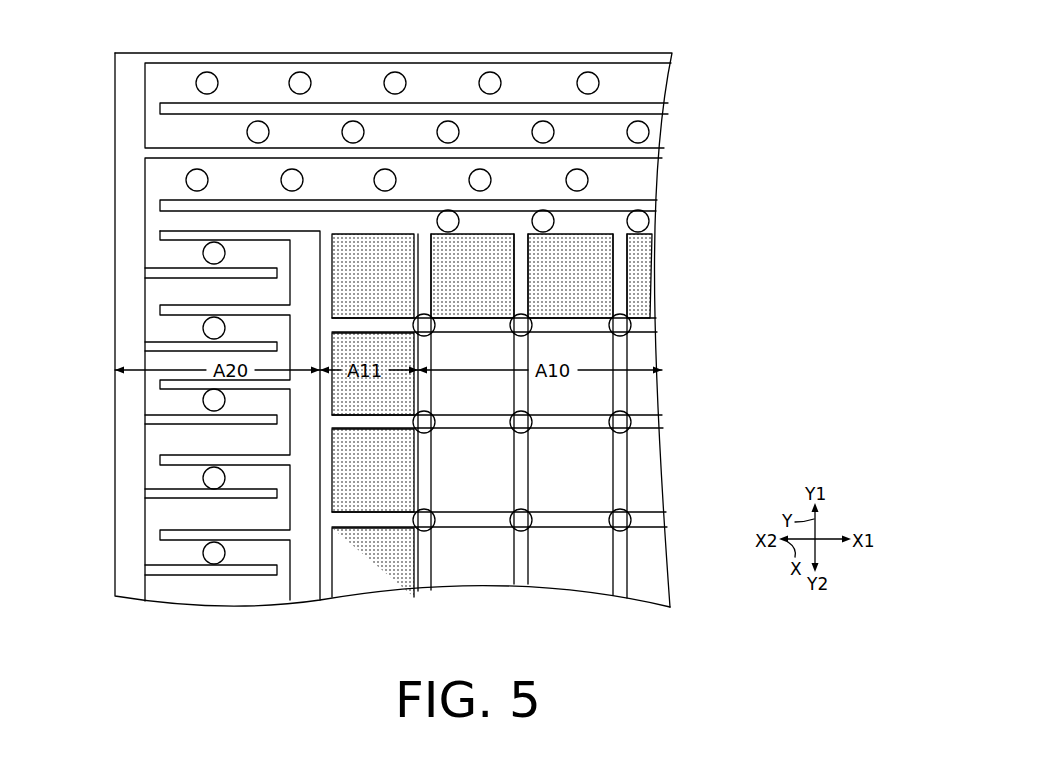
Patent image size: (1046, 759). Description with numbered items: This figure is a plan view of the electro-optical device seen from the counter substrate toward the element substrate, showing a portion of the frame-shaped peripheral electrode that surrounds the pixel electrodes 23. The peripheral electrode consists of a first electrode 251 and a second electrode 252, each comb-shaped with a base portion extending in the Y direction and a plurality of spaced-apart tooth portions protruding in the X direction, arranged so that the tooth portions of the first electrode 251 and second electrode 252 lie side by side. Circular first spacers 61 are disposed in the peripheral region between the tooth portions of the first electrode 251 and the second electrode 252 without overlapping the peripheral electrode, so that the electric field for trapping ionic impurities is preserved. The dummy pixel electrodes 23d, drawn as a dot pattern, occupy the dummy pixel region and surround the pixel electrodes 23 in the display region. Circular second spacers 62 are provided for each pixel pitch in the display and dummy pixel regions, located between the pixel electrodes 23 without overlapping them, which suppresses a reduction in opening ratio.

The pixel electrode 23 is at (480, 461).
The dummy pixel electrode 23d is at (573, 278).
The first spacer 61 is at (197, 176).
The second spacer 62 is at (543, 221).
The first electrode 251 is at (153, 232).
The second electrode 252 is at (135, 178).